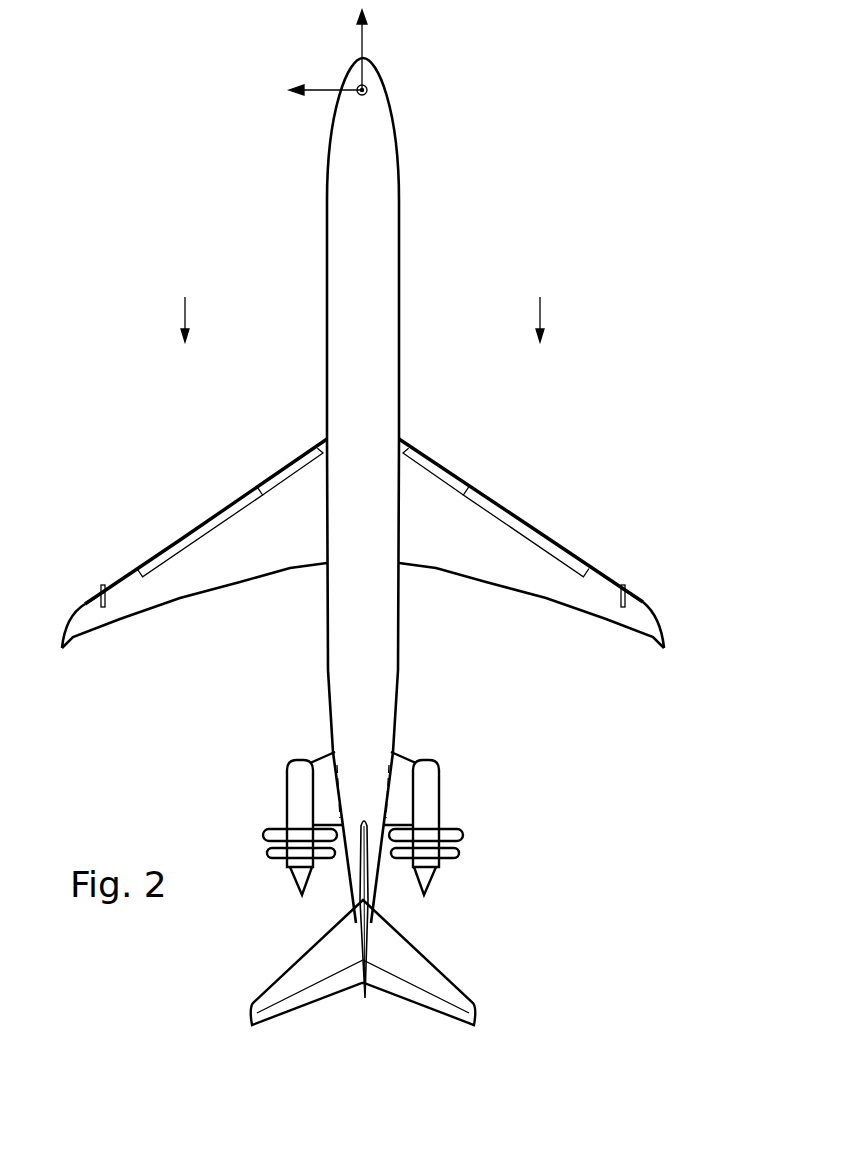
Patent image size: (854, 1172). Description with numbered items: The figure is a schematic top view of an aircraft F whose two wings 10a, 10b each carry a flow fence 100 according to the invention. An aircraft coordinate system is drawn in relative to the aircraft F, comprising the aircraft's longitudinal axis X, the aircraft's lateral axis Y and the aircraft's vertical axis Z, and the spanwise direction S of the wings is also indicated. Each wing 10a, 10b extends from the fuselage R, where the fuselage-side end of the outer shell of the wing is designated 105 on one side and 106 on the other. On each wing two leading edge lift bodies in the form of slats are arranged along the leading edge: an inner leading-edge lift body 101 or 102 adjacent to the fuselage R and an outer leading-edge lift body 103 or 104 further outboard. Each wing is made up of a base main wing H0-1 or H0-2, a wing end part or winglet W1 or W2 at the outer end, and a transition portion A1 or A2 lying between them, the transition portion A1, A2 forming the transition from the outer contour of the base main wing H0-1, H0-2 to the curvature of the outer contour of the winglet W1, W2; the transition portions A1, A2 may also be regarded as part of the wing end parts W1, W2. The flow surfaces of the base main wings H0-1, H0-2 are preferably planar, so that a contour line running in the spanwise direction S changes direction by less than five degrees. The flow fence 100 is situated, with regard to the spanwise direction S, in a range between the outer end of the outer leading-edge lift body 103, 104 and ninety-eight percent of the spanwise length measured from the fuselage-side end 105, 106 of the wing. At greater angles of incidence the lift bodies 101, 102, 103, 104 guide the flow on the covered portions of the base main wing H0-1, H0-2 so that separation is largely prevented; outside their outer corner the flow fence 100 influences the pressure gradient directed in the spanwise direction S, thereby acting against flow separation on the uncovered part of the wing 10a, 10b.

The aircraft F is at (157, 213).
The fuselage R is at (334, 255).
The spanwise direction S is at (362, 319).
The aircraft's longitudinal axis X is at (374, 50).
The aircraft's lateral axis Y is at (307, 95).
The aircraft's vertical axis Z is at (360, 108).
The wing 10a is at (145, 650).
The wing 10b is at (527, 629).
The flow fence 100 is at (107, 582).
The inner leading-edge lift body 101 is at (430, 468).
The inner leading-edge lift body 102 is at (287, 477).
The outer leading-edge lift body 103 is at (500, 515).
The outer leading-edge lift body 104 is at (202, 532).
The fuselage-side end of the outer shell of the wing 105 is at (400, 432).
The fuselage-side end of the outer shell of the wing 106 is at (327, 438).
The transition portion A1 is at (650, 600).
The transition portion A2 is at (89, 604).
The wing end part or winglet W1 is at (655, 626).
The wing end part or winglet W2 is at (71, 630).
The base main wing H0-1 is at (493, 573).
The base main wing H0-2 is at (170, 600).